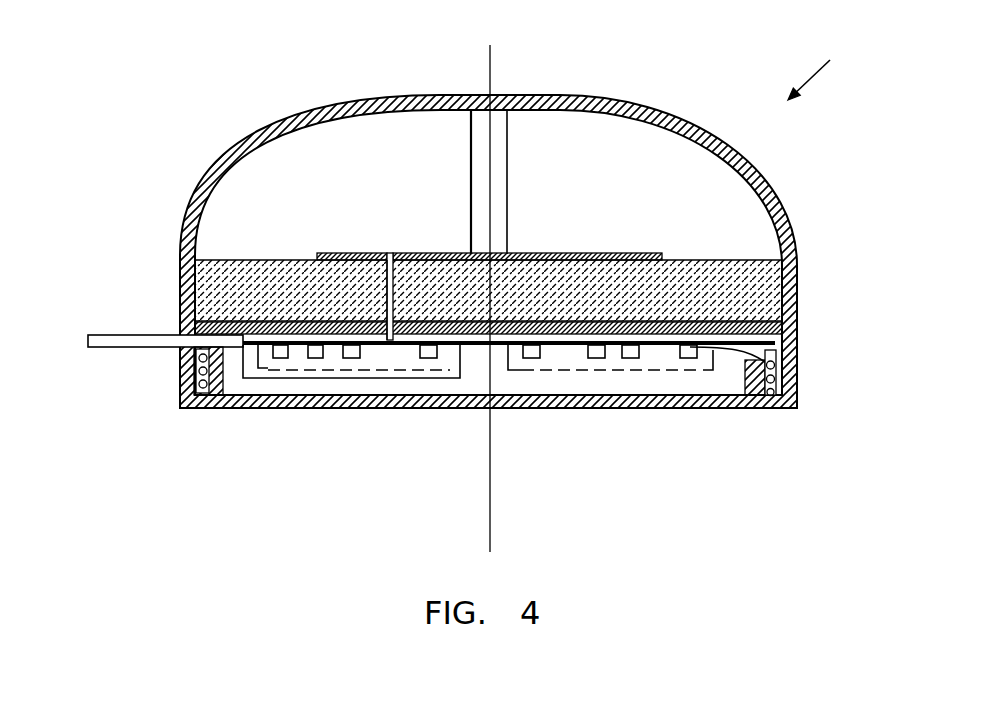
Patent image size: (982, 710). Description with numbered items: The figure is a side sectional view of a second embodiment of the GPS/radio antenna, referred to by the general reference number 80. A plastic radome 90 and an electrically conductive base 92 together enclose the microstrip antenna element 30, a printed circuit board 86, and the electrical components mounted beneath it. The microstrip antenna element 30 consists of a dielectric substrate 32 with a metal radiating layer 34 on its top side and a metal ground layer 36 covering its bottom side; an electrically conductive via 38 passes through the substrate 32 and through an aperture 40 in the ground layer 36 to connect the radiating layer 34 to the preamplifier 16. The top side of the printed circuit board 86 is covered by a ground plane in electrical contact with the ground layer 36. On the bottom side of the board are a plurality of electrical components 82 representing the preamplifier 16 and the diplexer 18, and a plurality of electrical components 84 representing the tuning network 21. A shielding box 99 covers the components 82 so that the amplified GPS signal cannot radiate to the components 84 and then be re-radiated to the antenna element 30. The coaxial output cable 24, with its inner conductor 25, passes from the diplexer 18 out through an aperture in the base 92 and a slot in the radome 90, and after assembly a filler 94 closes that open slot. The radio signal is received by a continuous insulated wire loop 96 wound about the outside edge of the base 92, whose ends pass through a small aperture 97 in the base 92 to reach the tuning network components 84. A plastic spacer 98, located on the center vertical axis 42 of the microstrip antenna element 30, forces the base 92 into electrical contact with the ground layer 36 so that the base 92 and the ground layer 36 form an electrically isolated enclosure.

The GPS/radio antenna second embodiment 80 is at (824, 66).
The plastic radome 90 is at (203, 177).
The plastic spacer 98 is at (471, 130).
The center vertical axis 42 is at (480, 531).
The dielectric substrate 32 is at (643, 303).
The metal ground layer 36 is at (797, 297).
The microstrip antenna element 30 is at (797, 262).
The metal radiating layer 34 is at (347, 254).
The aperture 40 is at (415, 256).
The electrically conductive via 38 is at (314, 275).
The coaxial output cable 24 is at (108, 349).
The filler 94 is at (182, 358).
The insulated wire loop 96 is at (182, 397).
The electrically conductive base 92 is at (203, 403).
The preamplifier 16 is at (265, 365).
The diplexer 18 is at (265, 365).
The inner conductor 25 is at (253, 347).
The shielding box 99 is at (433, 372).
The electrical components 82 is at (288, 358).
The tuning network 21 is at (520, 372).
The electrical components 84 is at (535, 360).
The printed circuit board 86 is at (788, 347).
The aperture 97 is at (745, 358).